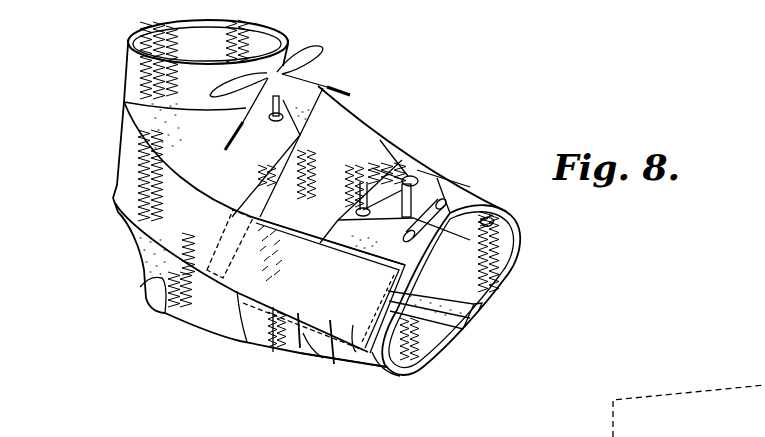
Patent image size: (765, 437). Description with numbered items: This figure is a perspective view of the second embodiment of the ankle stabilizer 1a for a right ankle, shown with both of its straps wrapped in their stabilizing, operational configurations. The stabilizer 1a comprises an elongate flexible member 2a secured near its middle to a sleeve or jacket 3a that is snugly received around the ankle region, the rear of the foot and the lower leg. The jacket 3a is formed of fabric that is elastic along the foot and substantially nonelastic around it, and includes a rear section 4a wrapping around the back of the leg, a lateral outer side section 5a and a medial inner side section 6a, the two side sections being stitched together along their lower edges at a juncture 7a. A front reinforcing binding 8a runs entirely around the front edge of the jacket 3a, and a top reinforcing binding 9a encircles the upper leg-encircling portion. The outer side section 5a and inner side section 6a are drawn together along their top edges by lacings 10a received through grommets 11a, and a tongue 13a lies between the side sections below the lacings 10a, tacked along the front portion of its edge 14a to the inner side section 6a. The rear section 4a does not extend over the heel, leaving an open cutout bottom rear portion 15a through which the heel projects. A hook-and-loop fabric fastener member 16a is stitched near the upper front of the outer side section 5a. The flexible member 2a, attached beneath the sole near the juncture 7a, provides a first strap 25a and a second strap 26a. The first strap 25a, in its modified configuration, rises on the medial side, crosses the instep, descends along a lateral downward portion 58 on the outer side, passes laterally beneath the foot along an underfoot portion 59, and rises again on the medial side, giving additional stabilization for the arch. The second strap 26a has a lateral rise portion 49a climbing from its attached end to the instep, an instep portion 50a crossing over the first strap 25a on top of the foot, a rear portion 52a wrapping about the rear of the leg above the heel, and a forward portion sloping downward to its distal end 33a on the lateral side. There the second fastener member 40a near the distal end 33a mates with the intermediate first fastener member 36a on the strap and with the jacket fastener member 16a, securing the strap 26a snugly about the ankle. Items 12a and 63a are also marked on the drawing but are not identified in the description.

The ankle stabilizer 1a is at (146, 310).
The elongate flexible member 2a is at (112, 181).
The jacket 3a is at (436, 185).
The rear section 4a is at (124, 102).
The outer side section 5a is at (339, 358).
The inner side section 6a is at (520, 233).
The juncture 7a is at (485, 307).
The front reinforcing binding 8a is at (376, 376).
The top reinforcing binding 9a is at (128, 60).
The lacings 10a is at (320, 55).
The lacing grommets 11a is at (414, 172).
The stud 12a is at (350, 226).
The tongue 13a is at (456, 228).
The tongue edge 14a is at (500, 210).
The cutout bottom rear portion 15a is at (143, 262).
The fabric fastener member 16a is at (327, 357).
The first strap 25a is at (395, 159).
The second strap 26a is at (135, 220).
The distal end of second strap 33a is at (355, 345).
The first fastener member 36a is at (272, 350).
The second fastener member 40a is at (380, 290).
The lateral rise portion 49a is at (246, 298).
The instep portion 50a is at (366, 128).
The rear portion 52a is at (119, 146).
The lateral downward portion 58 is at (157, 283).
The underfoot portion 59 is at (215, 332).
The seam 63a is at (200, 187).